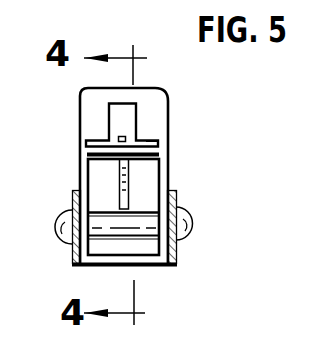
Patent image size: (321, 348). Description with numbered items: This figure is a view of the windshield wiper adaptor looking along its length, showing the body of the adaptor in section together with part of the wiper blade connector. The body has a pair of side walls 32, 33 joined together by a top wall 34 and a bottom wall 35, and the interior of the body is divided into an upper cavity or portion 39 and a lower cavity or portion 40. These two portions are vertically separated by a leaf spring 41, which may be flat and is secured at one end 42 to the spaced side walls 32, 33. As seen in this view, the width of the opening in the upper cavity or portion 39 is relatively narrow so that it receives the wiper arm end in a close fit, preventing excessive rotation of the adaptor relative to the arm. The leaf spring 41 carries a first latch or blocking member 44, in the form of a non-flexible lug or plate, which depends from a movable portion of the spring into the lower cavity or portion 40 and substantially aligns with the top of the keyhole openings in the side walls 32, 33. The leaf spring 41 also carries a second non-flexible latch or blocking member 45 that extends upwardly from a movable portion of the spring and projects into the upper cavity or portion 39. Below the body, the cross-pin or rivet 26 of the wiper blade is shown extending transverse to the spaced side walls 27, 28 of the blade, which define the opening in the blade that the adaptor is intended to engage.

The cross-pin 26 is at (143, 237).
The side wall 27 is at (72, 256).
The side wall 28 is at (178, 258).
The side wall 32 is at (170, 183).
The side wall 33 is at (80, 201).
The top wall 34 is at (134, 92).
The bottom wall 35 is at (110, 267).
The upper cavity 39 is at (123, 105).
The lower cavity 40 is at (100, 167).
The leaf spring 41 is at (145, 161).
The secured end 42 is at (150, 143).
The first latch or blocking member 44 is at (119, 183).
The second latch or blocking member 45 is at (119, 136).